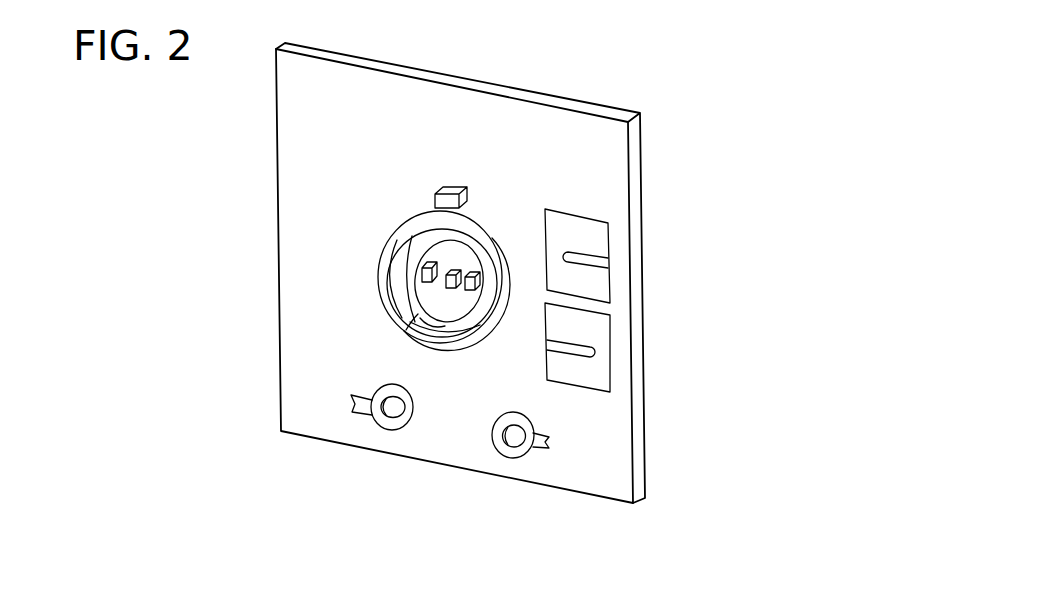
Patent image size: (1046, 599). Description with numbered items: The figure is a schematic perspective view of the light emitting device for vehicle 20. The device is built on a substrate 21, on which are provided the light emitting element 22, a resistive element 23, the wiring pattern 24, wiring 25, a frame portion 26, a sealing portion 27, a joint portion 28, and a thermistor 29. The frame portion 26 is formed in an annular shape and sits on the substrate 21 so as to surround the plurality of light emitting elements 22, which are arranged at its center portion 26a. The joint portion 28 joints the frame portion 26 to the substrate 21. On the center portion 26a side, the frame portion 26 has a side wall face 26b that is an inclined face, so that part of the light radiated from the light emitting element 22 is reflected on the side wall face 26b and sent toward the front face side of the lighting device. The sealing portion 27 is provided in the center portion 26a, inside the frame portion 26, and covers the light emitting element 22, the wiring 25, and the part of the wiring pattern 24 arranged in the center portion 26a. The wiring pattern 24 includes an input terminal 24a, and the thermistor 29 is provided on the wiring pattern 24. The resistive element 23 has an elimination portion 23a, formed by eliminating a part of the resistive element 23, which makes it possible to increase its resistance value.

The light emitting device for vehicle 20 is at (633, 77).
The substrate 21 is at (587, 162).
The light emitting element 22 is at (415, 262).
The resistive element 23 is at (595, 287).
The elimination portion 23a is at (592, 262).
The wiring pattern 24 is at (547, 450).
The input terminal 24a is at (505, 456).
The wiring 25 is at (422, 272).
The frame portion 26 is at (392, 315).
The center portion 26a is at (444, 284).
The side wall face 26b is at (430, 315).
The sealing portion 27 is at (411, 312).
The joint portion 28 is at (493, 237).
The thermistor 29 is at (445, 187).